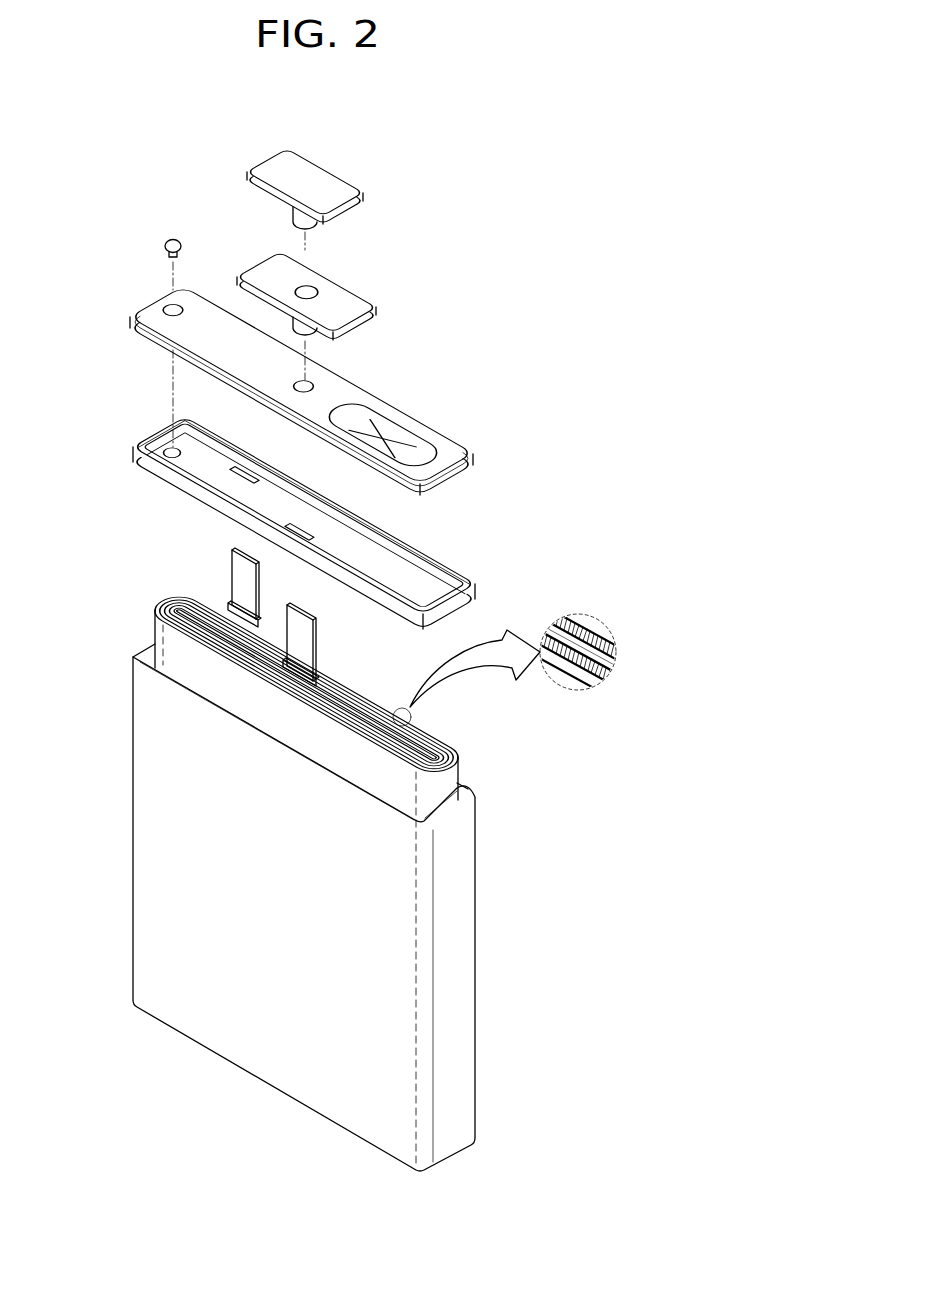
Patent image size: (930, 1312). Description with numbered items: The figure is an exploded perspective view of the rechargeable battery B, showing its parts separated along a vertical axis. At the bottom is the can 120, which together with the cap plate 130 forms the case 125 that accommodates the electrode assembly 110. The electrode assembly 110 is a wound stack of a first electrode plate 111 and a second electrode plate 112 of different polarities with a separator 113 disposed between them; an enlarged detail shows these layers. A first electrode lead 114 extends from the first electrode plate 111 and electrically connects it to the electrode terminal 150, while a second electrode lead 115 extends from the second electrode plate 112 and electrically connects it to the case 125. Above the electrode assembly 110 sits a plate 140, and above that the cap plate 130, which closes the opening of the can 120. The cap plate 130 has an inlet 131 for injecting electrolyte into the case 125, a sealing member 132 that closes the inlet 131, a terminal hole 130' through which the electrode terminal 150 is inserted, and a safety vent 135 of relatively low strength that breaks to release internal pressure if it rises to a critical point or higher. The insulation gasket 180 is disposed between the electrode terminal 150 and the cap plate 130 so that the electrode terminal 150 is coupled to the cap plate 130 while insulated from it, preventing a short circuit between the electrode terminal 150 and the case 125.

The rechargeable battery B is at (262, 1093).
The electrode assembly 110 is at (421, 668).
The first electrode plate 111 is at (598, 678).
The second electrode plate 112 is at (612, 655).
The separator 113 is at (608, 668).
The first electrode lead 114 is at (305, 638).
The second electrode lead 115 is at (237, 568).
The can 120 is at (465, 972).
The case 125 is at (130, 345).
The cap plate 130 is at (312, 374).
The terminal hole 130' is at (347, 365).
The inlet 131 is at (165, 305).
The sealing member 132 is at (168, 238).
The safety vent 135 is at (410, 432).
The insulating plate 140 is at (470, 600).
The electrode terminal 150 is at (337, 187).
The insulation gasket 180 is at (350, 293).